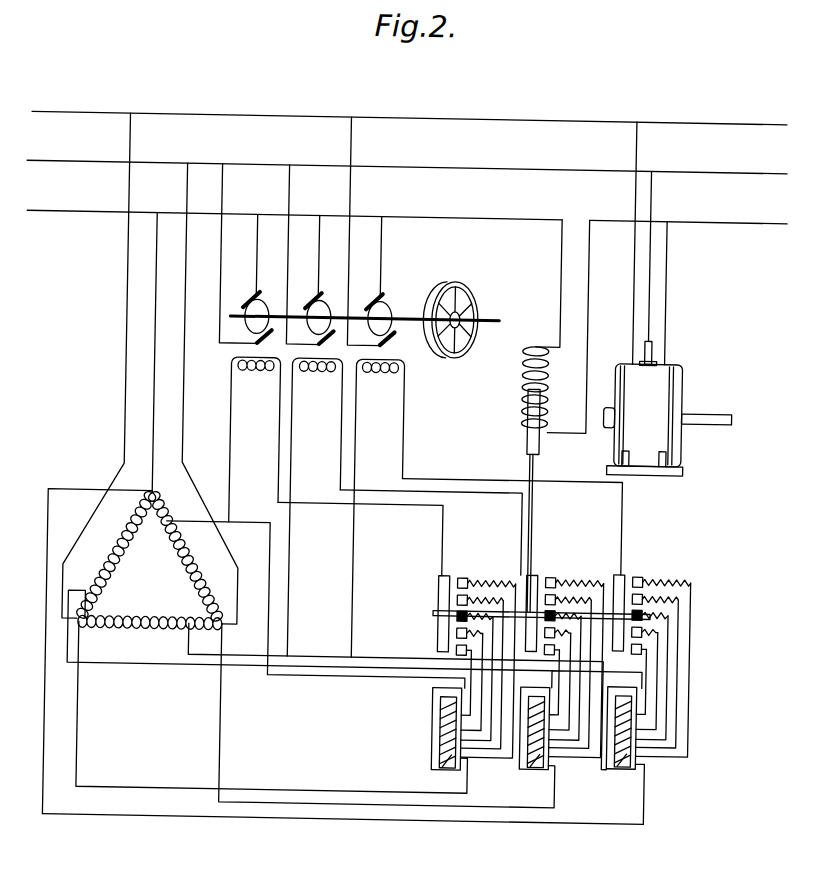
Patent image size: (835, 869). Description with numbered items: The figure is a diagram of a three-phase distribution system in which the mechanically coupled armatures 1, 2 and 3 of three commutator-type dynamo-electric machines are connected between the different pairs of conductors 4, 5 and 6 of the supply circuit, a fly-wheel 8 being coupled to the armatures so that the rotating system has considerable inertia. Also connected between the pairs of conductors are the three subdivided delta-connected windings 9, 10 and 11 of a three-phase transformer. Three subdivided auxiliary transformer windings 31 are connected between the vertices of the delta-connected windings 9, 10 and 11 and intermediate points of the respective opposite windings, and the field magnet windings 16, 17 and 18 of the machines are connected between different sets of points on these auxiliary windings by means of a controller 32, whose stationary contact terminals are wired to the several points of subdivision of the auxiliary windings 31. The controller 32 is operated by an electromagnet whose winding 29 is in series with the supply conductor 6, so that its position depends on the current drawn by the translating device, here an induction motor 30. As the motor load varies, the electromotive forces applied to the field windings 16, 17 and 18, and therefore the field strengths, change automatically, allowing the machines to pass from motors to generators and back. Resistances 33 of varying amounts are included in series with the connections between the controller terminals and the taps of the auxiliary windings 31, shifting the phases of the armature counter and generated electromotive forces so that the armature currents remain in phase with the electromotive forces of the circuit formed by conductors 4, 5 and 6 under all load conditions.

The armature 1 is at (257, 313).
The armature 2 is at (319, 314).
The armature 3 is at (380, 316).
The conductor 4 is at (409, 106).
The conductor 5 is at (407, 156).
The conductor 6 is at (407, 206).
The fly-wheel 8 is at (465, 303).
The delta-connected transformer winding 9 is at (187, 561).
The delta-connected transformer winding 10 is at (137, 553).
The delta-connected transformer winding 11 is at (156, 622).
The field magnet winding 16 is at (255, 440).
The field magnet winding 17 is at (314, 507).
The field magnet winding 18 is at (377, 508).
The electromagnet winding 29 is at (546, 408).
The induction motor 30 is at (670, 299).
The auxiliary transformer winding 31 is at (532, 741).
The controller 32 is at (547, 574).
The resistance 33 is at (671, 582).